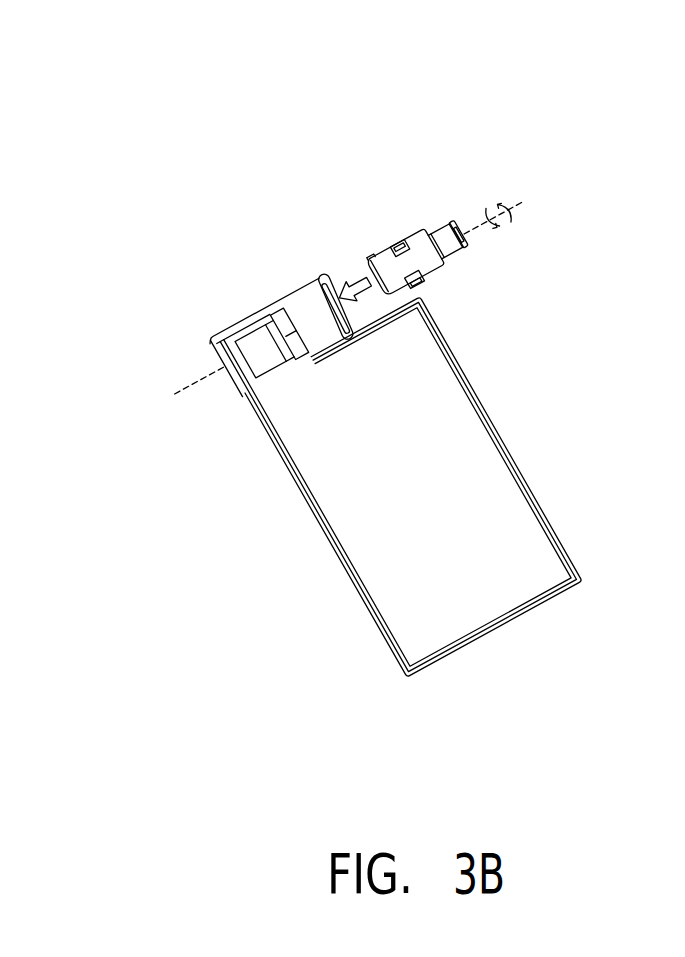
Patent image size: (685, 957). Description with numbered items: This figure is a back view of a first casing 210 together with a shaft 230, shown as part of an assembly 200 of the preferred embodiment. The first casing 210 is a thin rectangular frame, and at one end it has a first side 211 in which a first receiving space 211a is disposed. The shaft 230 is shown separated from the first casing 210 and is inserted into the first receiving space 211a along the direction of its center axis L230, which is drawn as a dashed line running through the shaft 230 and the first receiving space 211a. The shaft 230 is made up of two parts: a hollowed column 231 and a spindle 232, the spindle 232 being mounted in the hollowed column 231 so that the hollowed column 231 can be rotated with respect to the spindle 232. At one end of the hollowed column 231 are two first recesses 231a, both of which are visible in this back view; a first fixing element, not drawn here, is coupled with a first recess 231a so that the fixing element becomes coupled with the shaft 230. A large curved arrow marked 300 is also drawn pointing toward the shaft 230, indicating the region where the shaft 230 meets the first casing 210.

The electronic device 200 is at (146, 53).
The first casing 210 is at (465, 465).
The first side 211 is at (227, 373).
The first receiving space 211a is at (337, 278).
The shaft 230 is at (435, 107).
The hollowed column 231 is at (378, 252).
The first recess 231a is at (382, 237).
The spindle 232 is at (437, 228).
The external connector 300 is at (482, 167).
The center axis L230 is at (528, 213).